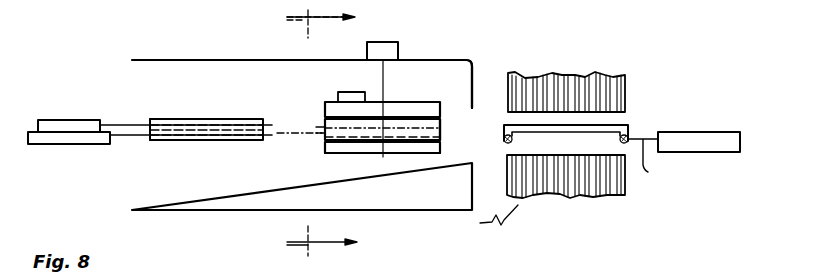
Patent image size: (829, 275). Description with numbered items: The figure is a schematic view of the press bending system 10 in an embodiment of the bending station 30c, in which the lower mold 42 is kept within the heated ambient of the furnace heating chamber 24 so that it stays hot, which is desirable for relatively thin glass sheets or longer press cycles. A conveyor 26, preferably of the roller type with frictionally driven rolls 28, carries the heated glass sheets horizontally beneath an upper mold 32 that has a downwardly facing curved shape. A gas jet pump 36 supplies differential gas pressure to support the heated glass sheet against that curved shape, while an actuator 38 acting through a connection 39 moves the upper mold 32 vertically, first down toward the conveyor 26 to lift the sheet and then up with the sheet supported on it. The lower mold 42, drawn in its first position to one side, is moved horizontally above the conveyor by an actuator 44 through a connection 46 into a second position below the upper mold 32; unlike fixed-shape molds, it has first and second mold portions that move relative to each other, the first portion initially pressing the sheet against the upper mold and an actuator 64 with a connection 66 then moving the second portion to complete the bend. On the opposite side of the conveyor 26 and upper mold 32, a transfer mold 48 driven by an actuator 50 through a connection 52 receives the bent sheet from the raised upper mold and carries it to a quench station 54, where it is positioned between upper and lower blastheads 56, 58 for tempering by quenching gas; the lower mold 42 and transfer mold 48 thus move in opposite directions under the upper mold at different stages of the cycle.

The section line indicator 10 is at (336, 132).
The heating chamber 24 is at (335, 61).
The conveyor 26 is at (318, 149).
The rolls 28 is at (383, 155).
The bending station 30c is at (461, 58).
The upper mold 32 is at (408, 101).
The gas jet pump 36 is at (338, 92).
The actuator 38 is at (398, 42).
The connection 39 is at (385, 75).
The lower mold 42 is at (322, 133).
The actuator 44 is at (40, 146).
The connection 46 is at (118, 139).
The transfer mold 48 is at (630, 136).
The actuator 50 is at (710, 132).
The connection 52 is at (589, 159).
The quench station 54 is at (581, 78).
The upper blasthead 56 is at (580, 73).
The lower blasthead 58 is at (577, 196).
The actuator 64 is at (68, 120).
The connection 66 is at (112, 124).